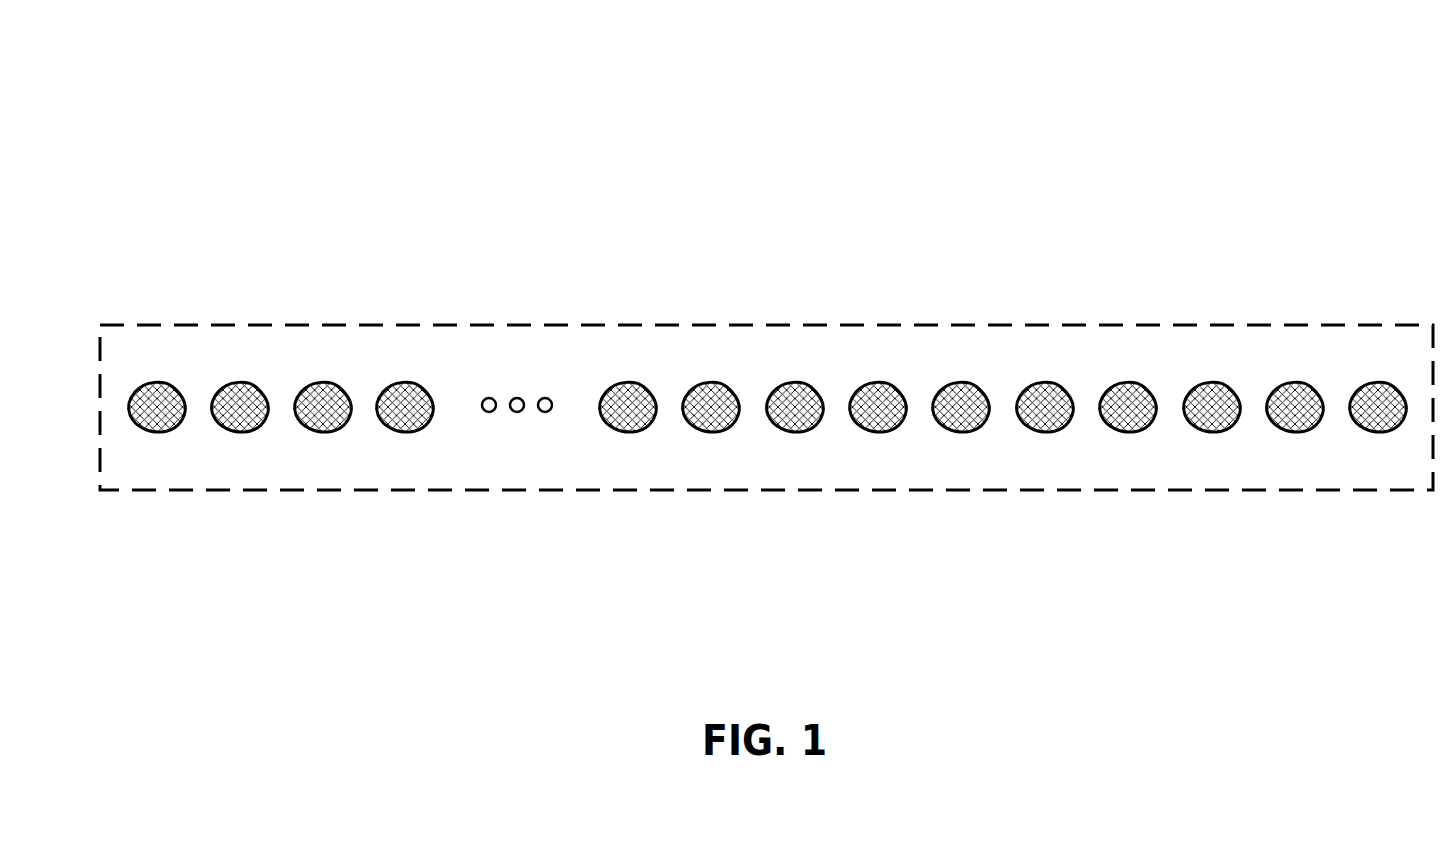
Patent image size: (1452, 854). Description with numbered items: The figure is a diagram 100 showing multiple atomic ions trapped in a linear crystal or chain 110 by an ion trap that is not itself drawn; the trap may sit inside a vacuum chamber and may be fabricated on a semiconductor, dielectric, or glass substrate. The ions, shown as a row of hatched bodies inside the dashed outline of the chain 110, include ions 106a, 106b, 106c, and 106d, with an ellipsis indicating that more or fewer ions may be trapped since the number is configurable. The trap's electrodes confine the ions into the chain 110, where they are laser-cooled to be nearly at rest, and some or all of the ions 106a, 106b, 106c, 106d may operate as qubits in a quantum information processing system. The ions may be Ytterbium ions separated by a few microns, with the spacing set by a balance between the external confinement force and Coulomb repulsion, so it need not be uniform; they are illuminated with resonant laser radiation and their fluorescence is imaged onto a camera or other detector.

The diagram 100 is at (258, 75).
The linear crystal or chain 110 is at (831, 316).
The ion 106a is at (186, 388).
The ion 106b is at (269, 388).
The ion 106c is at (1319, 383).
The ion 106d is at (1401, 383).